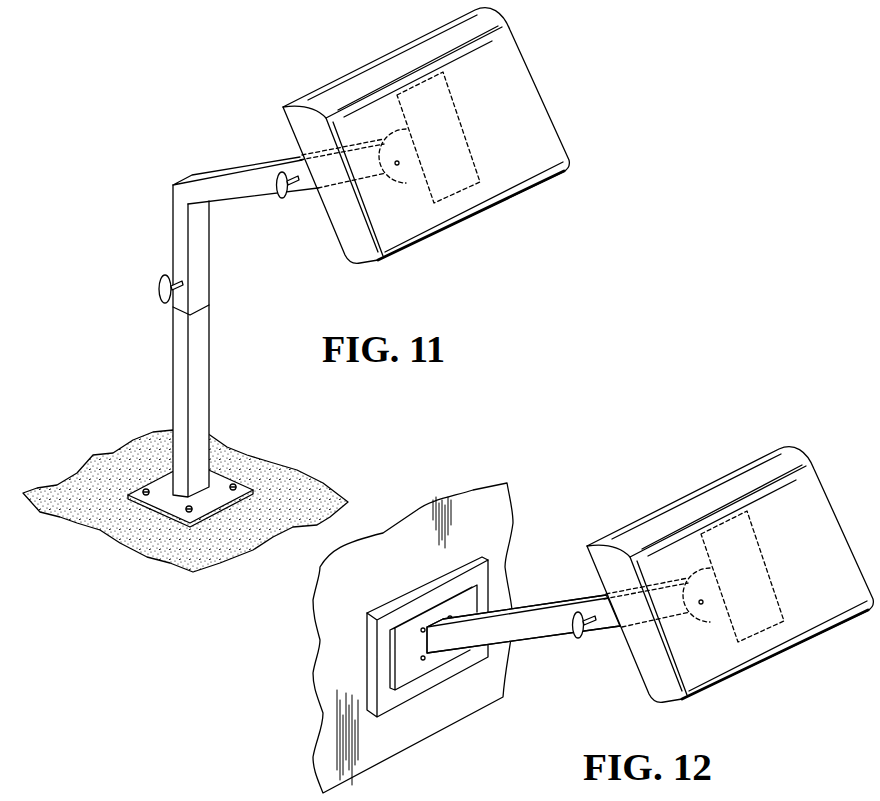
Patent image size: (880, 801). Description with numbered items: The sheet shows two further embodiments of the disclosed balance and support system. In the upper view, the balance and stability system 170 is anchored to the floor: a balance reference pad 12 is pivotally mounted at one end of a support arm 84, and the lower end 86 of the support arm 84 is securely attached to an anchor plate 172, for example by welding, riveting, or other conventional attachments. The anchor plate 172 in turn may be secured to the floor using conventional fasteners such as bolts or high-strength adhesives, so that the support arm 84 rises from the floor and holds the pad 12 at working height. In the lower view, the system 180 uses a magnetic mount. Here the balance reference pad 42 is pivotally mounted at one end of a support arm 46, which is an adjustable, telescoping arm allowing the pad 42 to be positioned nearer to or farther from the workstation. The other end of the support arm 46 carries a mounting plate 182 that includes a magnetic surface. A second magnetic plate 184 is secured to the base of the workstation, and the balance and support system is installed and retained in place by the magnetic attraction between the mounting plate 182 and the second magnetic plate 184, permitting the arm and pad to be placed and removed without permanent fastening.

In FIG. 11, the balance reference pad 12 is at (535, 82).
In FIG. 11, the support arm 84 is at (172, 244).
In FIG. 11, the lower end of the support arm 86 is at (200, 461).
In FIG. 11, the balance and stability system 170 is at (229, 115).
In FIG. 11, the anchor plate 172 is at (160, 487).
In FIG. 12, the balance reference pad 42 is at (840, 515).
In FIG. 12, the support arm 46 is at (535, 610).
In FIG. 12, the system 180 is at (595, 500).
In FIG. 12, the mounting plate 182 is at (467, 603).
In FIG. 12, the second magnetic plate 184 is at (437, 597).